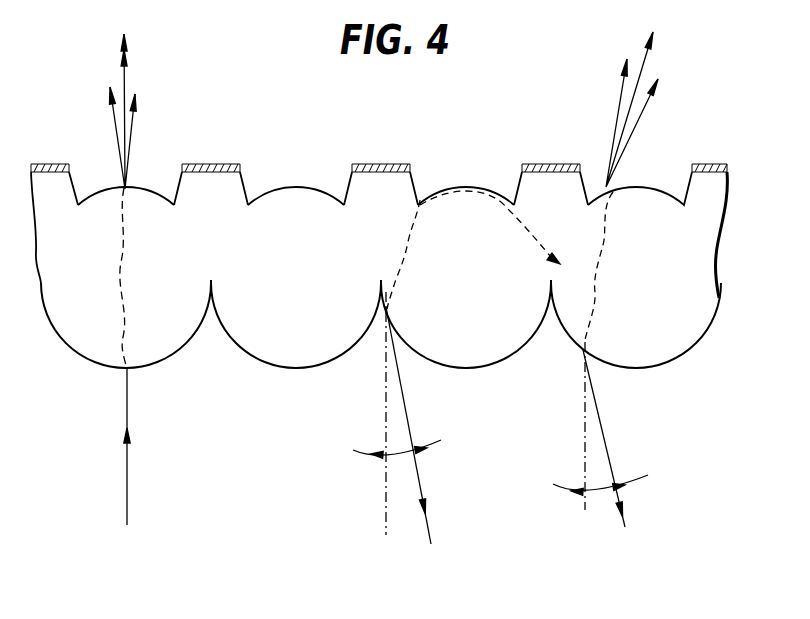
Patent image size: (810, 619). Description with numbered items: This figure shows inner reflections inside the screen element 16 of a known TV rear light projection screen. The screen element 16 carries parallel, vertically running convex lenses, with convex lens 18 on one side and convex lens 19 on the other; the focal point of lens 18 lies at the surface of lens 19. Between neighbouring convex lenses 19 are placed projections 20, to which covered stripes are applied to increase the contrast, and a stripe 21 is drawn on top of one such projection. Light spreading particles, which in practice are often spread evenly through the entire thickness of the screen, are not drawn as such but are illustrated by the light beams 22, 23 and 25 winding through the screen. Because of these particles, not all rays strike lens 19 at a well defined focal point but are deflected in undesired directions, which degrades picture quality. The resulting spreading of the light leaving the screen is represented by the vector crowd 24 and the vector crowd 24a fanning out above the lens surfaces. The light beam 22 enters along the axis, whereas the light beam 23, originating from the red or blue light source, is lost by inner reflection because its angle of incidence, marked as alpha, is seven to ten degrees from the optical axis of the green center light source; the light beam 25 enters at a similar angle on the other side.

The screen element 16 is at (655, 330).
The convex lens 18 is at (465, 365).
The convex lens 19 is at (305, 180).
The projections 20 is at (378, 192).
The opaque mask pad 21 is at (222, 163).
The light beam 22 is at (145, 446).
The light beam 23 is at (406, 418).
The vector crowd 24 is at (137, 111).
The vector crowd 24a is at (656, 109).
The light beam 25 is at (609, 434).